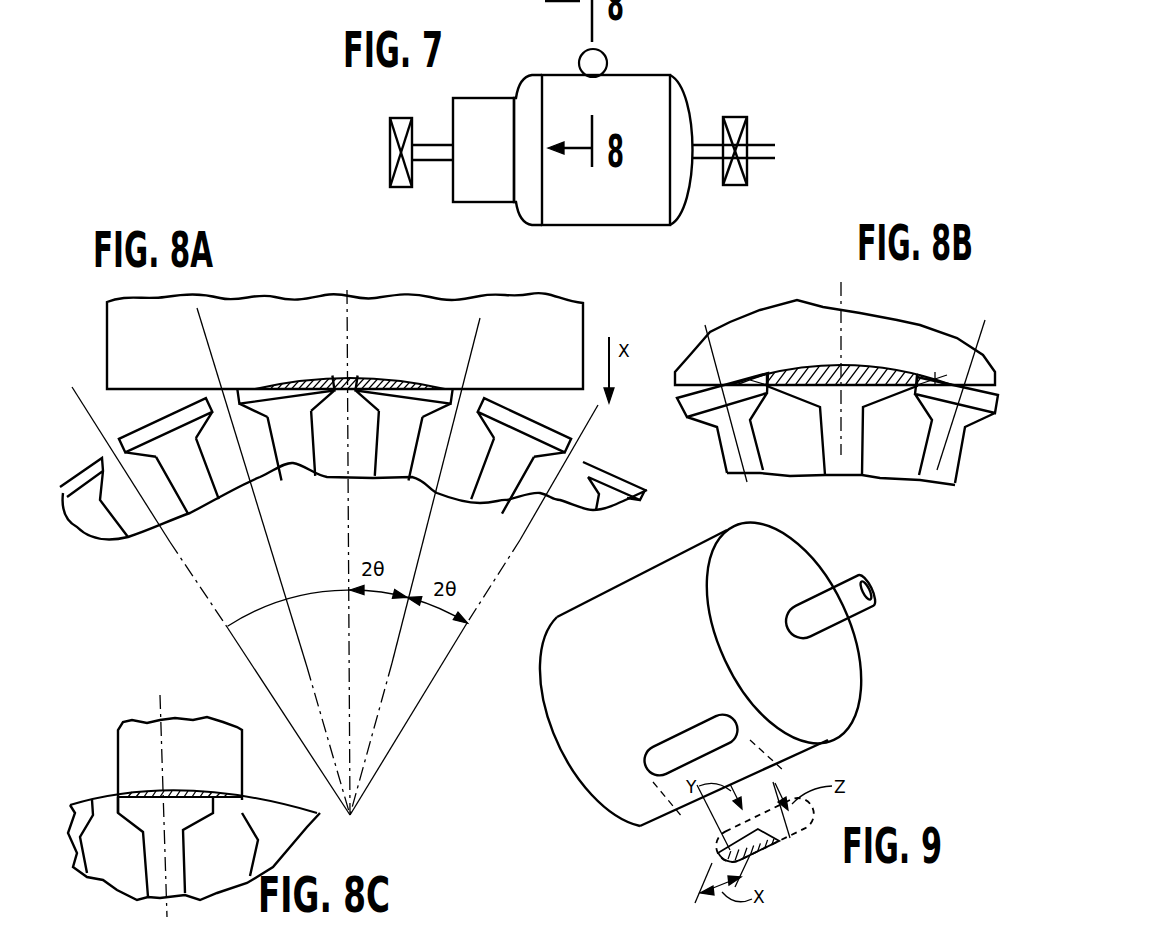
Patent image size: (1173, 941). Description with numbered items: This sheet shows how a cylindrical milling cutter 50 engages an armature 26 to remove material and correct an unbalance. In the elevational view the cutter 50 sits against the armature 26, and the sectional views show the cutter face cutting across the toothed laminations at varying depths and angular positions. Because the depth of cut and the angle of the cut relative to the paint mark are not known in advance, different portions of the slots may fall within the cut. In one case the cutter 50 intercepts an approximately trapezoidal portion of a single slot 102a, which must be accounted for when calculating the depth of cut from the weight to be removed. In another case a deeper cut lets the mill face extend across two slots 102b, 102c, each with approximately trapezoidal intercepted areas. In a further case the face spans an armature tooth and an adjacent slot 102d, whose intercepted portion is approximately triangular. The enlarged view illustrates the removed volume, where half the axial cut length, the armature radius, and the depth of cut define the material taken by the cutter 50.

In FIG. 7, the armature 26 is at (567, 213).
In FIG. 8A, the armature 26 is at (603, 468).
In FIG. 8B, the armature 26 is at (952, 465).
In FIG. 8C, the armature 26 is at (87, 807).
In FIG. 7, the cylindrical milling cutter 50 is at (599, 50).
In FIG. 8A, the cylindrical milling cutter 50 is at (275, 355).
In FIG. 8B, the cylindrical milling cutter 50 is at (822, 308).
In FIG. 8C, the cylindrical milling cutter 50 is at (125, 753).
In FIG. 8A, the slot 102a is at (367, 413).
In FIG. 8B, the slot 102b is at (785, 408).
In FIG. 8B, the slot 102c is at (898, 412).
In FIG. 8C, the slot 102d is at (235, 832).